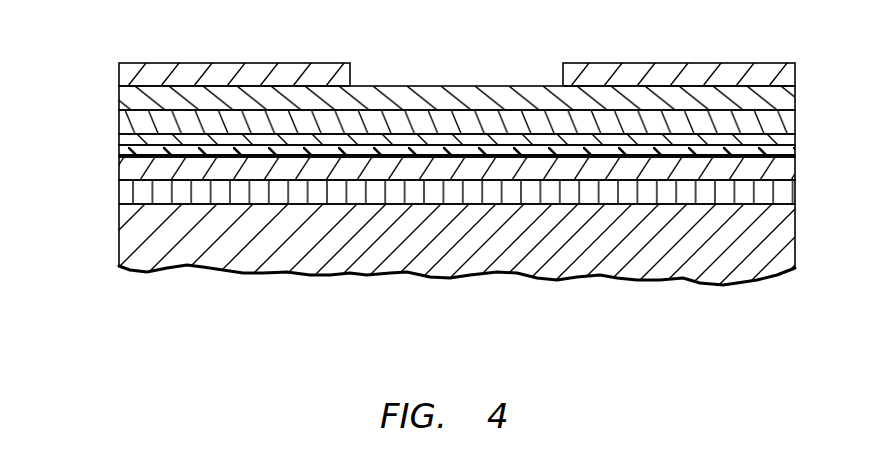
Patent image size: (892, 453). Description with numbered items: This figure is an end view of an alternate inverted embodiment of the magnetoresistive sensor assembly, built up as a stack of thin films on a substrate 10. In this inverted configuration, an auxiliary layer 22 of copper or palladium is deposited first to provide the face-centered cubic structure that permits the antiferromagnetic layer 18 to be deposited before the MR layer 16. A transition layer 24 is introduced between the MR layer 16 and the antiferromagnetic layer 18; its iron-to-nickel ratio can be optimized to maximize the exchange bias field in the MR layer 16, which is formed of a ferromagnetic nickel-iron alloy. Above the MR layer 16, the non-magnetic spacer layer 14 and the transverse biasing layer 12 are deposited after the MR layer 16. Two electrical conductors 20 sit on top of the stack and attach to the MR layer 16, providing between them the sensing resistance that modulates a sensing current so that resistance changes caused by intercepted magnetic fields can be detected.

The substrate 10 is at (128, 233).
The transverse biasing layer 12 is at (775, 100).
The non-magnetic spacer layer 14 is at (128, 125).
The MR layer 16 is at (787, 141).
The antiferromagnetic layer 18 is at (128, 172).
The electrical conductors 20 is at (243, 63).
The auxiliary layer 22 is at (775, 193).
The transition layer 24 is at (130, 152).